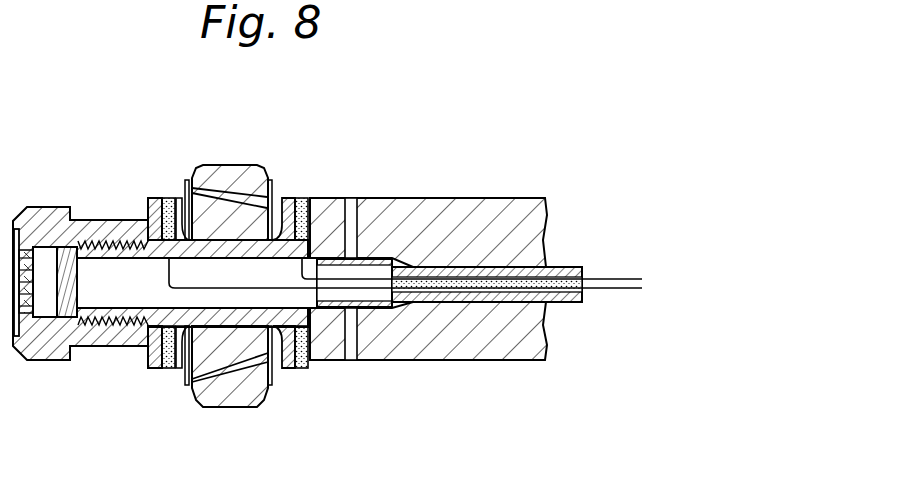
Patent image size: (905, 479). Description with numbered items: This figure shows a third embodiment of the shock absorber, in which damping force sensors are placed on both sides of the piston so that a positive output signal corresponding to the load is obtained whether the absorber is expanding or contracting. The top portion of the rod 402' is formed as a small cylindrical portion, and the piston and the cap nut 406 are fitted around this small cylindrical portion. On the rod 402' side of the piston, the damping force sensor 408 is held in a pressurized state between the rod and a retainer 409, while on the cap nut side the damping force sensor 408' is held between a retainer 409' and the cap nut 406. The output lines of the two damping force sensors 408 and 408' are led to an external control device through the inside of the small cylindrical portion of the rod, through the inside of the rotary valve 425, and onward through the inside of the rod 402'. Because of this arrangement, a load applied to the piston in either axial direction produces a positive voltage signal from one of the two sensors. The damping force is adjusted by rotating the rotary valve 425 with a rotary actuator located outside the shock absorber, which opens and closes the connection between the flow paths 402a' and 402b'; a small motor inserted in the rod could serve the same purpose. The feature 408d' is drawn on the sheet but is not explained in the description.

The cap nut 406 is at (40, 206).
The damping force sensor 408' is at (145, 258).
The retainer 409' is at (216, 252).
The retainer 409 is at (235, 264).
The damping force sensor 408 is at (301, 258).
The flow path 402a' is at (380, 252).
The rotary valve 425 is at (412, 257).
The rod 402' is at (428, 252).
The inner bore step 408d' is at (204, 333).
The flow path 402b' is at (216, 333).